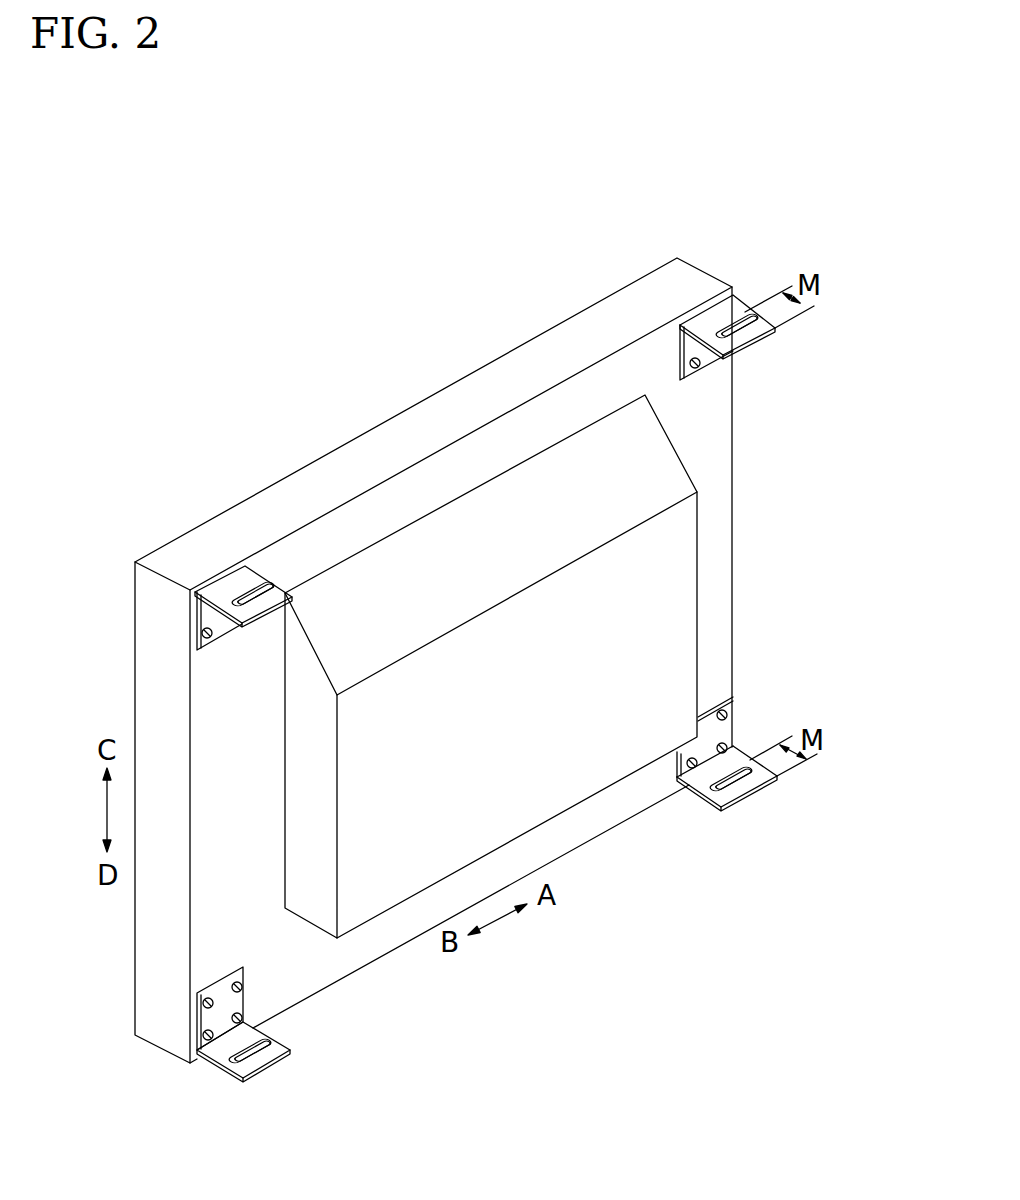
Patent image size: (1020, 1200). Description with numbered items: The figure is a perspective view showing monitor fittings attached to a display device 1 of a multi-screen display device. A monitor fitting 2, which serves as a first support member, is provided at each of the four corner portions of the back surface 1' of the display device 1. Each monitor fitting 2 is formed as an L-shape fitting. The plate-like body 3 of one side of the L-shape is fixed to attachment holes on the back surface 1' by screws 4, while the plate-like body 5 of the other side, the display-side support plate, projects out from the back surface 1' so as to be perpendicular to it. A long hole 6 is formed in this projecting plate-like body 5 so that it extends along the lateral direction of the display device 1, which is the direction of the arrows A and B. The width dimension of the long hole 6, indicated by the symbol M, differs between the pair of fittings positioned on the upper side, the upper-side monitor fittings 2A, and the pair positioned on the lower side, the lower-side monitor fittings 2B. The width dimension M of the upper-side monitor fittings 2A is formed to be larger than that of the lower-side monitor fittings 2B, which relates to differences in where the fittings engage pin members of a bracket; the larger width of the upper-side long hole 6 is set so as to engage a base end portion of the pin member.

The display device 1 is at (433, 660).
The back surface 1' is at (491, 633).
The monitor fitting 2 is at (475, 687).
The upper-side monitor fitting 2A is at (204, 583).
The lower-side monitor fitting 2B is at (211, 1080).
The plate-like body 3 is at (196, 631).
The screw 4 is at (205, 636).
The plate-like body of the other side 5 is at (262, 586).
The long hole 6 is at (248, 598).